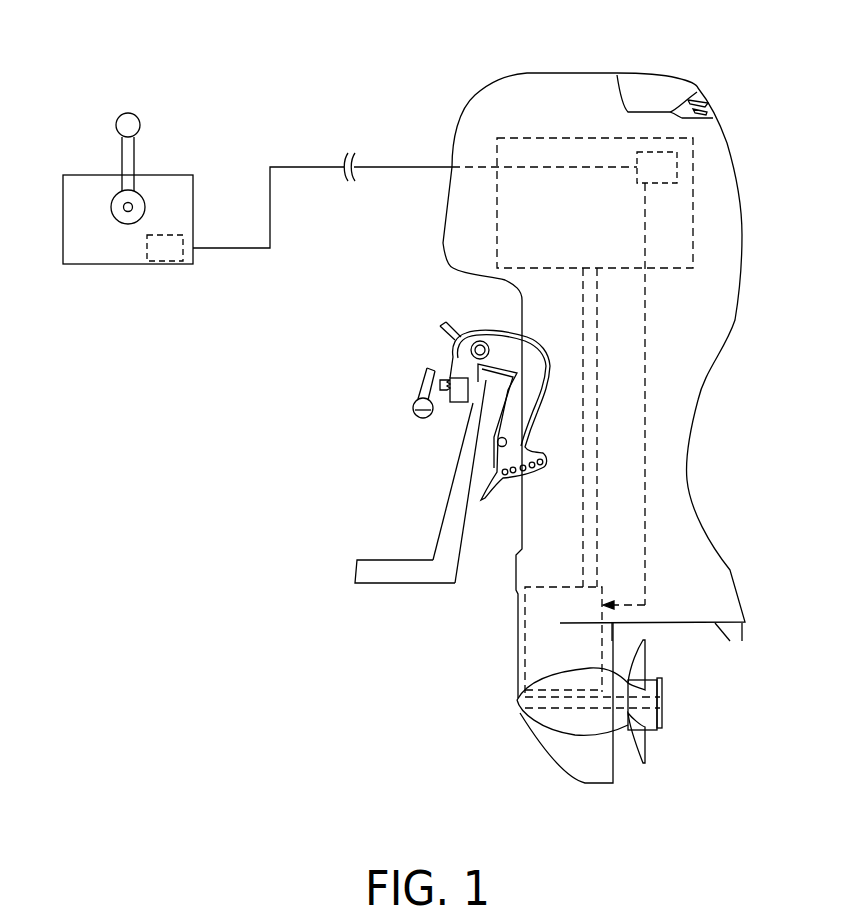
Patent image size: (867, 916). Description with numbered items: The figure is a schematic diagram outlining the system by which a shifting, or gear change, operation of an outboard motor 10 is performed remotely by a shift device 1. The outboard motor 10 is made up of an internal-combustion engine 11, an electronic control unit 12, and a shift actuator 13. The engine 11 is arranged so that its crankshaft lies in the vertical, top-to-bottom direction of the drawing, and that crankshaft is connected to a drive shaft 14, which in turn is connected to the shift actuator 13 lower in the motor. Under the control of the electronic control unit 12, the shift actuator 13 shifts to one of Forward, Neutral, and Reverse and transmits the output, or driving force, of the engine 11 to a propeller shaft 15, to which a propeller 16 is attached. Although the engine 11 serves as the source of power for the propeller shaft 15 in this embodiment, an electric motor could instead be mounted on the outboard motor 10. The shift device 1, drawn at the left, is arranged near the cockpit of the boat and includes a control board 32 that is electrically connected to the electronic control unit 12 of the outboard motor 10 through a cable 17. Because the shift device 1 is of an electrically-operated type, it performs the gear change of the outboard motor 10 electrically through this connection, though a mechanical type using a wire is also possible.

The shift device 1 is at (165, 175).
The control board 32 is at (168, 265).
The cable 17 is at (310, 165).
The outboard motor 10 is at (653, 73).
The internal-combustion engine 11 is at (548, 138).
The electronic control unit 12 is at (693, 167).
The shift actuator 13 is at (525, 645).
The drive shaft 14 is at (585, 522).
The propeller shaft 15 is at (540, 713).
The propeller 16 is at (648, 745).